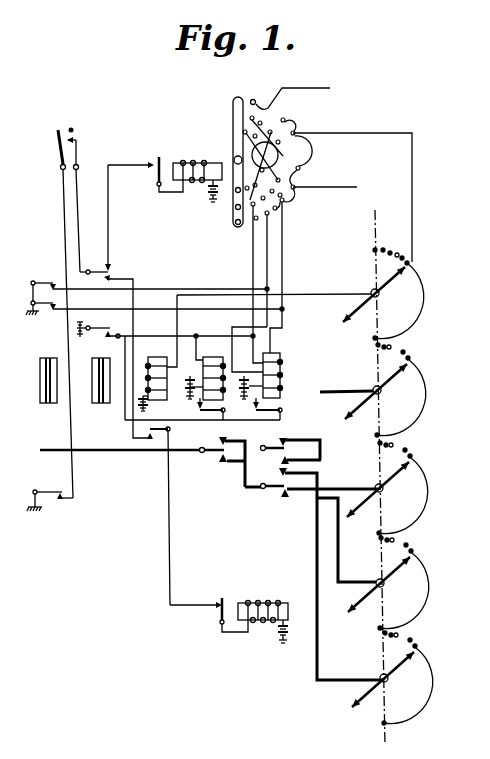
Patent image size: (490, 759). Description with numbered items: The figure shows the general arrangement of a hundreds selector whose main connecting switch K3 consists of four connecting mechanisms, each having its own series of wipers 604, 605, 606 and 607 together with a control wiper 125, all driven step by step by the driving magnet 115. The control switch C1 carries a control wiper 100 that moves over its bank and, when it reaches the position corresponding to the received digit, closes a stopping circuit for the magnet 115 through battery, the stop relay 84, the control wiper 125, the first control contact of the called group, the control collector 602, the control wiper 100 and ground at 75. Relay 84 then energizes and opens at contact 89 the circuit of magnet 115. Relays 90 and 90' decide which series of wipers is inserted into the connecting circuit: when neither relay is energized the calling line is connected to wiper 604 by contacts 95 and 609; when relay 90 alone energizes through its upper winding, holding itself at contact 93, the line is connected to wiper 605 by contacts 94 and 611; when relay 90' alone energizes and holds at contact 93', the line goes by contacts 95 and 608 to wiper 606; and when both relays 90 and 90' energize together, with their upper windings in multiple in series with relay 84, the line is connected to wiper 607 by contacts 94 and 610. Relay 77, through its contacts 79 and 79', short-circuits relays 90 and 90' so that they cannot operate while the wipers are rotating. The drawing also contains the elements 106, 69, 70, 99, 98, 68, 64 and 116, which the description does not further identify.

The calling key 106 is at (83, 310).
The contact 69 is at (129, 216).
The contact 70 is at (110, 278).
The armature contact 99 is at (159, 170).
The relay 98 is at (197, 163).
The control wiper 100 is at (212, 201).
The control switch C1 is at (252, 212).
The control collector 602 is at (352, 189).
The main connecting switch K3 is at (373, 470).
The contact of relay 77 79 is at (149, 275).
The contact of relay 77 79' is at (154, 306).
The ground 75 is at (166, 371).
The control wiper 125 is at (300, 294).
The relay 90 is at (205, 368).
The relay 90' is at (275, 343).
The wiper 604 is at (373, 390).
The relay 77 is at (44, 394).
The resistance 68 is at (96, 394).
The stop relay 84 is at (157, 359).
The holding contact 93 is at (202, 410).
The holding contact 93' is at (282, 405).
The contact 89 is at (169, 431).
The contact 94 is at (223, 457).
The contact 95 is at (143, 461).
The contact 608 is at (288, 443).
The contact 609 is at (301, 455).
The contact 610 is at (281, 473).
The contact 611 is at (283, 491).
The wiper 605 is at (387, 488).
The wiper 606 is at (373, 564).
The wiper 607 is at (392, 678).
The contact 64 is at (50, 508).
The driving magnet 115 is at (263, 614).
The contact 116 is at (209, 615).